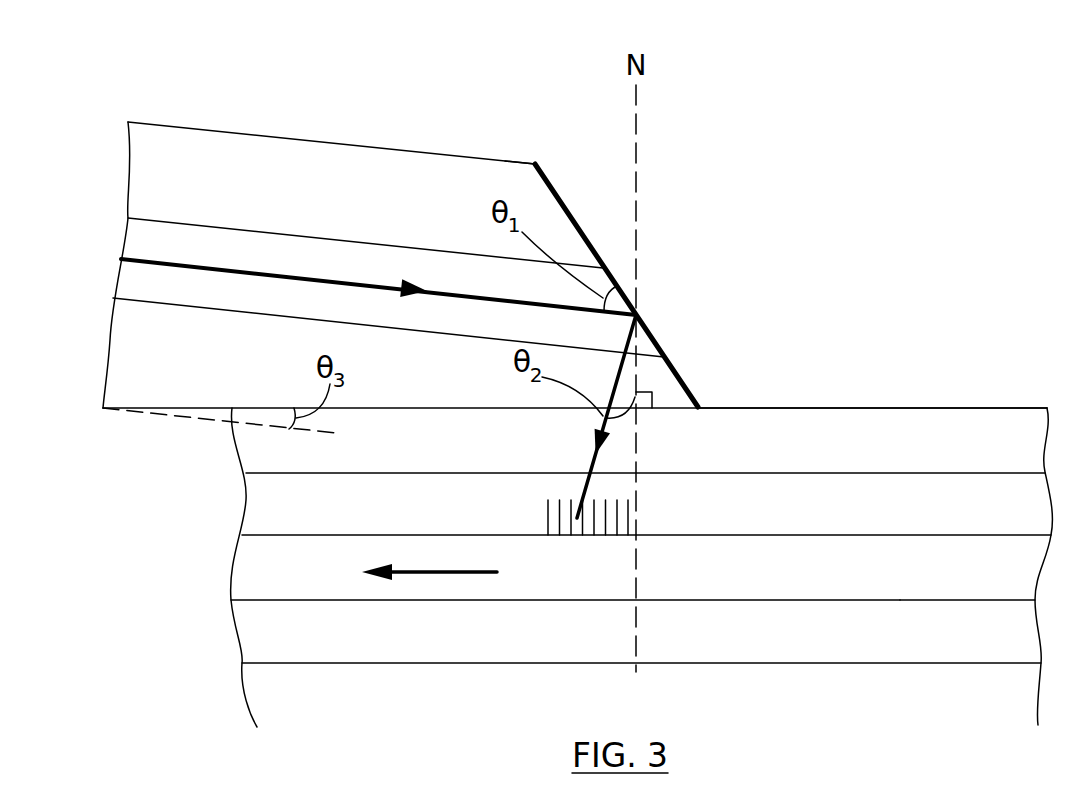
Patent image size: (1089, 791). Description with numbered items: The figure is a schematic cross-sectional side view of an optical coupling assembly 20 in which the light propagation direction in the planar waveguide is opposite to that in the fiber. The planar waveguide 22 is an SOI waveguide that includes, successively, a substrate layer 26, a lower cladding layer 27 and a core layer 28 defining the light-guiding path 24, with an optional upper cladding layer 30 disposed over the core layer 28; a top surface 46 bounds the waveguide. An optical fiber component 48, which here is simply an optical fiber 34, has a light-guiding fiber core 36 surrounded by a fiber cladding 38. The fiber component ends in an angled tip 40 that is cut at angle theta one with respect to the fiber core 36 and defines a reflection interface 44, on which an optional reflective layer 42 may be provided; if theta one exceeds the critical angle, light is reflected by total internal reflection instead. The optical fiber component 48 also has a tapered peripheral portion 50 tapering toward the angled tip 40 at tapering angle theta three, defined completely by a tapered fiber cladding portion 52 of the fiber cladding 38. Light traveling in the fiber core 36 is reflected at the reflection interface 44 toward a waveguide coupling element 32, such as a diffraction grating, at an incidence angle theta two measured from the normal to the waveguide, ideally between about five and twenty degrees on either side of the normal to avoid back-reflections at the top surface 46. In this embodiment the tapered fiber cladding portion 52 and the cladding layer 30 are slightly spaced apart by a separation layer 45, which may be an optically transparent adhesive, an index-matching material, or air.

The optical coupling assembly 20 is at (831, 84).
The planar waveguide 22 is at (1004, 385).
The light-guiding path 24 is at (250, 570).
The substrate layer 26 is at (269, 711).
The lower cladding layer 27 is at (264, 646).
The core layer 28 is at (969, 584).
The upper cladding layer 30 is at (276, 521).
The waveguide coupling element 32 is at (629, 515).
The optical fiber 34 is at (353, 117).
The light-guiding fiber core 36 is at (147, 248).
The fiber cladding 38 is at (161, 188).
The angled tip 40 is at (761, 254).
The reflective layer 42 is at (563, 197).
The reflection interface 44 is at (538, 176).
The separation layer 45 is at (249, 464).
The top surface 46 is at (847, 407).
The optical fiber component 48 is at (240, 113).
The tapered peripheral portion 50 is at (439, 386).
The tapered fiber cladding portion 52 is at (372, 386).